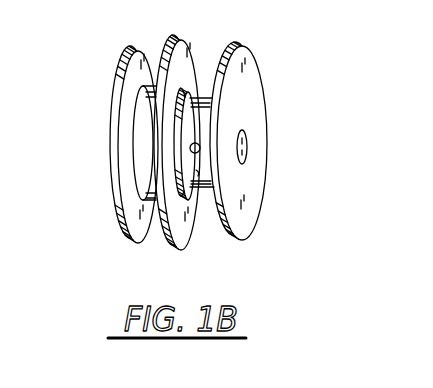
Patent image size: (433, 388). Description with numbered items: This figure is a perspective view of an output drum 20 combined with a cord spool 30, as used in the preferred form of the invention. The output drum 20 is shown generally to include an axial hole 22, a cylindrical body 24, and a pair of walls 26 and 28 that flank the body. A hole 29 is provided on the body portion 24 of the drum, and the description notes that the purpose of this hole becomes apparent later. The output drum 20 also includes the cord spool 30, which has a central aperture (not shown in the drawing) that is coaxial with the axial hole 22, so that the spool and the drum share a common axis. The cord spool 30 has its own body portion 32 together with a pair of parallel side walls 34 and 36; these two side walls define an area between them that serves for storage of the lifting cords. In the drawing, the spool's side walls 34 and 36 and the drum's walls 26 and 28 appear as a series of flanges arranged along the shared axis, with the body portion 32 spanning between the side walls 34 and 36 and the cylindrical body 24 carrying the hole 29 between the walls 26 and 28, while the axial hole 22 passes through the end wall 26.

The output drum 20 is at (192, 153).
The axial hole 22 is at (247, 148).
The cylindrical body 24 is at (190, 179).
The wall 26 is at (237, 244).
The wall 28 is at (189, 82).
The hole 29 is at (200, 146).
The cord spool 30 is at (106, 167).
The body portion 32 is at (137, 193).
The side wall 34 is at (128, 244).
The side wall 36 is at (176, 251).